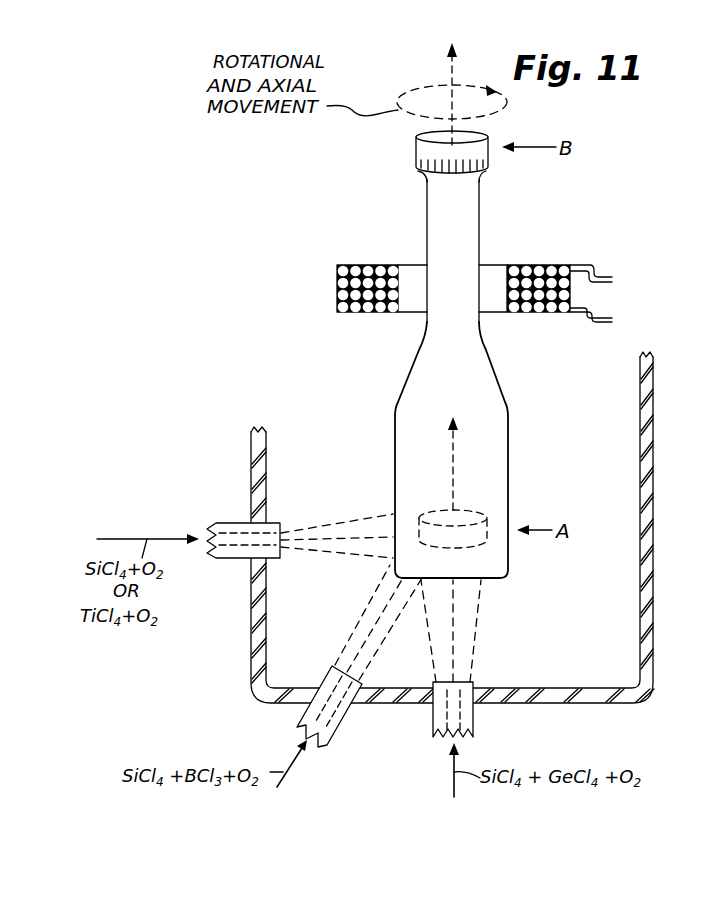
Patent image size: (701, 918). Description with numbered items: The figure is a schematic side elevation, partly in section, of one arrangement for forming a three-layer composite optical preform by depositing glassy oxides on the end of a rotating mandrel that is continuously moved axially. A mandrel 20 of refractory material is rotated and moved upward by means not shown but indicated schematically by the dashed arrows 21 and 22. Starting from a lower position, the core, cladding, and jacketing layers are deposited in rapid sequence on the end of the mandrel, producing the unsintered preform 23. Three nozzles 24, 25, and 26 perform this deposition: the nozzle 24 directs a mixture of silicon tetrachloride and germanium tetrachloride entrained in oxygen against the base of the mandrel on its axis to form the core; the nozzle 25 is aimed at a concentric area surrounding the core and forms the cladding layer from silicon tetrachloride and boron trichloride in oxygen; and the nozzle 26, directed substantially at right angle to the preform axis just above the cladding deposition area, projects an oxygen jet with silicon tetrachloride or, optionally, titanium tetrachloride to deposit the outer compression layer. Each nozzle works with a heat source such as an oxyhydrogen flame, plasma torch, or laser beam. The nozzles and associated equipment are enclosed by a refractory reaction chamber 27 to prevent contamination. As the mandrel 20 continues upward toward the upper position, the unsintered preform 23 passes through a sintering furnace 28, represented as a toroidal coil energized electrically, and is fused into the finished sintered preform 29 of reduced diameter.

The mandrel 20 is at (414, 152).
The dashed arrow 21 is at (507, 103).
The dashed arrow 22 is at (466, 96).
The unsintered preform 23 is at (394, 423).
The nozzle 24 is at (473, 717).
The nozzle 25 is at (295, 717).
The nozzle 26 is at (227, 522).
The refractory reaction chamber 27 is at (640, 445).
The sintering furnace 28 is at (337, 292).
The sintered preform 29 is at (427, 226).